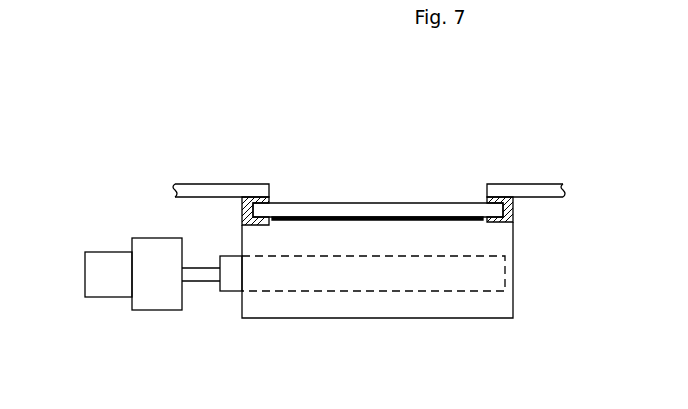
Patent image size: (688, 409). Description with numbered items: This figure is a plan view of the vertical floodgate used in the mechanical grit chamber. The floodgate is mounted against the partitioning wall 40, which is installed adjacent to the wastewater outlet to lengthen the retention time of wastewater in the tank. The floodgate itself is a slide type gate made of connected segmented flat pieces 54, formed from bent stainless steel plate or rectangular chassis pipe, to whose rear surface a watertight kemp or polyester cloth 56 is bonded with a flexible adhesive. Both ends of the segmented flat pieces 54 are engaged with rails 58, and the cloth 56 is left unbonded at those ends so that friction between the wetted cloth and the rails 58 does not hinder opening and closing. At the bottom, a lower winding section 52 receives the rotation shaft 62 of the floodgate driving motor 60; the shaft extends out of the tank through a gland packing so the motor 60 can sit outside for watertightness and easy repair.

The partitioning wall 40 is at (517, 192).
The lower winding section 52 is at (367, 308).
The segmented flat pieces 54 is at (283, 208).
The cloth 56 is at (398, 213).
The rails 58 is at (512, 212).
The floodgate driving motor 60 is at (112, 257).
The rotation shaft 62 is at (197, 275).